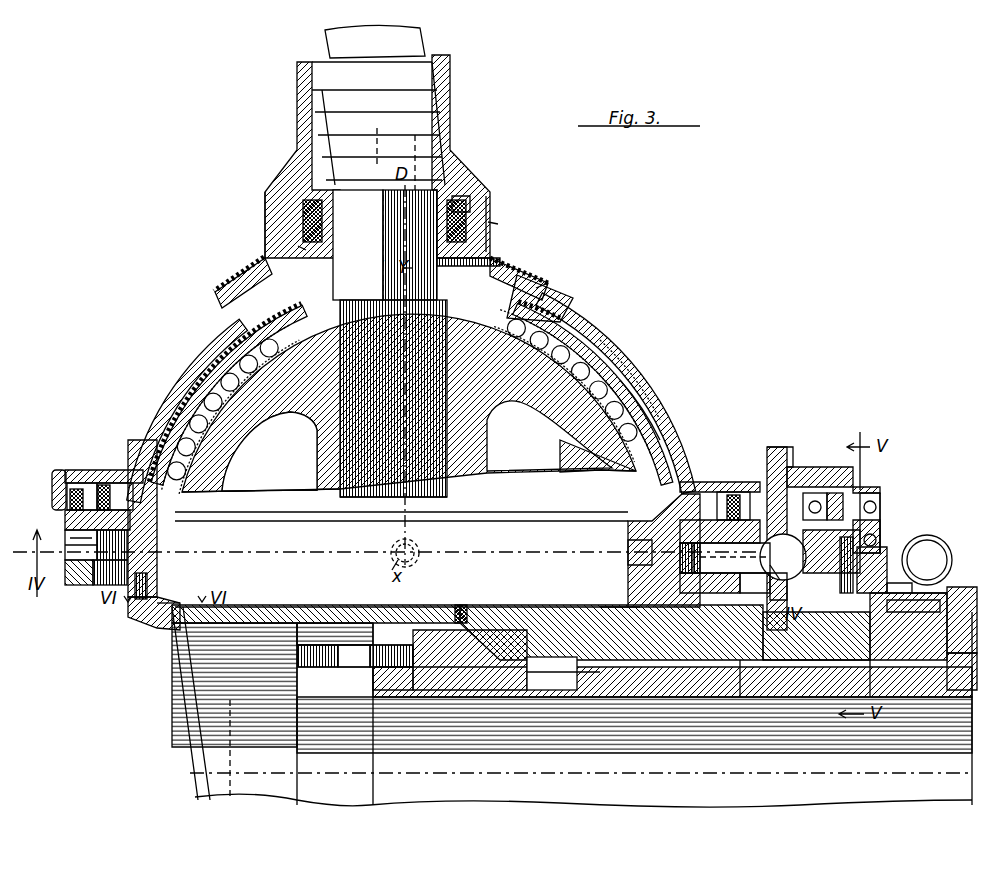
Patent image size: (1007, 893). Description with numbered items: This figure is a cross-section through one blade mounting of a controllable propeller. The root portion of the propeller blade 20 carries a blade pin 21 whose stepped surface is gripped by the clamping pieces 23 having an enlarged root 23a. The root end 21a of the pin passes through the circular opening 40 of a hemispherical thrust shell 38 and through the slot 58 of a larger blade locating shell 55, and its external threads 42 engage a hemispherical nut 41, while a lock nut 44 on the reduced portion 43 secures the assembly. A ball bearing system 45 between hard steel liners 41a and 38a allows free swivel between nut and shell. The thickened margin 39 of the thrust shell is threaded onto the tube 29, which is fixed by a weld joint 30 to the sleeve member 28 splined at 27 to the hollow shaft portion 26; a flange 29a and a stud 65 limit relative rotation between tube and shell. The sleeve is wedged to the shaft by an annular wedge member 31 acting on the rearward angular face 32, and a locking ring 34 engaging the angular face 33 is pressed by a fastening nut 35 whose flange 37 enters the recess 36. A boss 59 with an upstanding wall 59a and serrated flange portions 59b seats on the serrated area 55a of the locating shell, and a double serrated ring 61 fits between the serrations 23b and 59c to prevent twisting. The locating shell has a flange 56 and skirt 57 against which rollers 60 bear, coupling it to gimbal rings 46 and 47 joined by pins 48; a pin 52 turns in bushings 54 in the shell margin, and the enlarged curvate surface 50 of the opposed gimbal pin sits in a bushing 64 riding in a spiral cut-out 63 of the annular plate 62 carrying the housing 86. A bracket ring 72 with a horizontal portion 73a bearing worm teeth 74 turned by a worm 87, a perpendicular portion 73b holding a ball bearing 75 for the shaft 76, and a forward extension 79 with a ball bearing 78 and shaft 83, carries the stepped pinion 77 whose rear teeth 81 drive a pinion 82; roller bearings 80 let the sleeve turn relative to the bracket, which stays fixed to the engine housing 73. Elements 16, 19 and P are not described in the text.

The propeller blade 20 is at (420, 42).
The clamping pieces 23 is at (452, 93).
The blade pin 21 is at (413, 128).
The root end of blade pin 21a is at (300, 232).
The upstanding wall of boss 59a is at (462, 200).
The enlarged root of clamping pieces 23a is at (493, 202).
The serrations of recess inner wall 23b is at (500, 223).
The double serrated ring 61 is at (470, 228).
The serrations of boss wall 59c is at (420, 225).
The boss 59 is at (232, 292).
The flange portions of boss 59b is at (506, 266).
The slot 58 is at (540, 282).
The circular opening 40 is at (540, 293).
The thrust shell 38 is at (666, 450).
The hard steel liner of thrust shell 38a is at (628, 372).
The hard steel liner of nut 41a is at (643, 400).
The blade locating shell 55 is at (182, 368).
The ball bearing system 45 is at (586, 340).
The serrated area 55a is at (563, 305).
The external threads of blade bolt 42 is at (360, 322).
The lock nut 44 is at (330, 491).
The reduced portion 43 is at (442, 494).
The hemispherical nut 41 is at (595, 475).
The tube 29 is at (176, 562).
The marginal edge of thrust shell 39 is at (172, 547).
The bushings 54 is at (422, 552).
The pin 52 is at (416, 562).
The skirt 57 is at (56, 491).
The flange 56 is at (102, 470).
The rollers 60 is at (72, 490).
The gimbal ring 47 is at (102, 510).
The pin 48 is at (74, 546).
The shaft end 16 is at (76, 580).
The stud 65 is at (141, 600).
The flange 29a is at (153, 615).
The weld joint 30 is at (177, 624).
The housing 86 is at (787, 447).
The annular plate 62 is at (805, 467).
The ball bearing 78 is at (812, 493).
The pinion 77 is at (834, 493).
The curvate surface 50 is at (781, 545).
The gimbal ring 46 is at (766, 550).
The bushing 64 is at (775, 575).
The spiral cut-outs 63 is at (772, 595).
The coupling 19 is at (748, 592).
The rear set of teeth 81 is at (872, 493).
The perpendicularly extending portion 73b is at (870, 488).
The ball bearing 75 is at (882, 500).
The shaft 76 is at (876, 530).
The bracket ring 72 is at (880, 560).
The worm 87 is at (930, 550).
The worm teeth 74 is at (905, 590).
The engine housing 73 is at (968, 600).
The horizontal portion 73a is at (950, 590).
The sleeve member 28 is at (556, 622).
The axis P is at (591, 750).
The splines 27 is at (682, 697).
The recess 36 is at (460, 618).
The fastening nut 35 is at (400, 645).
The hollow shaft portion 26 is at (493, 690).
The angular face 33 is at (545, 690).
The locking ring 34 is at (440, 690).
The flange 37 is at (390, 690).
The forward extension 79 is at (760, 660).
The shaft 83 is at (800, 662).
The roller bearings 80 is at (895, 660).
The pinion 82 is at (910, 612).
The annular wedge member 31 is at (950, 690).
The rearward angular face 32 is at (871, 697).